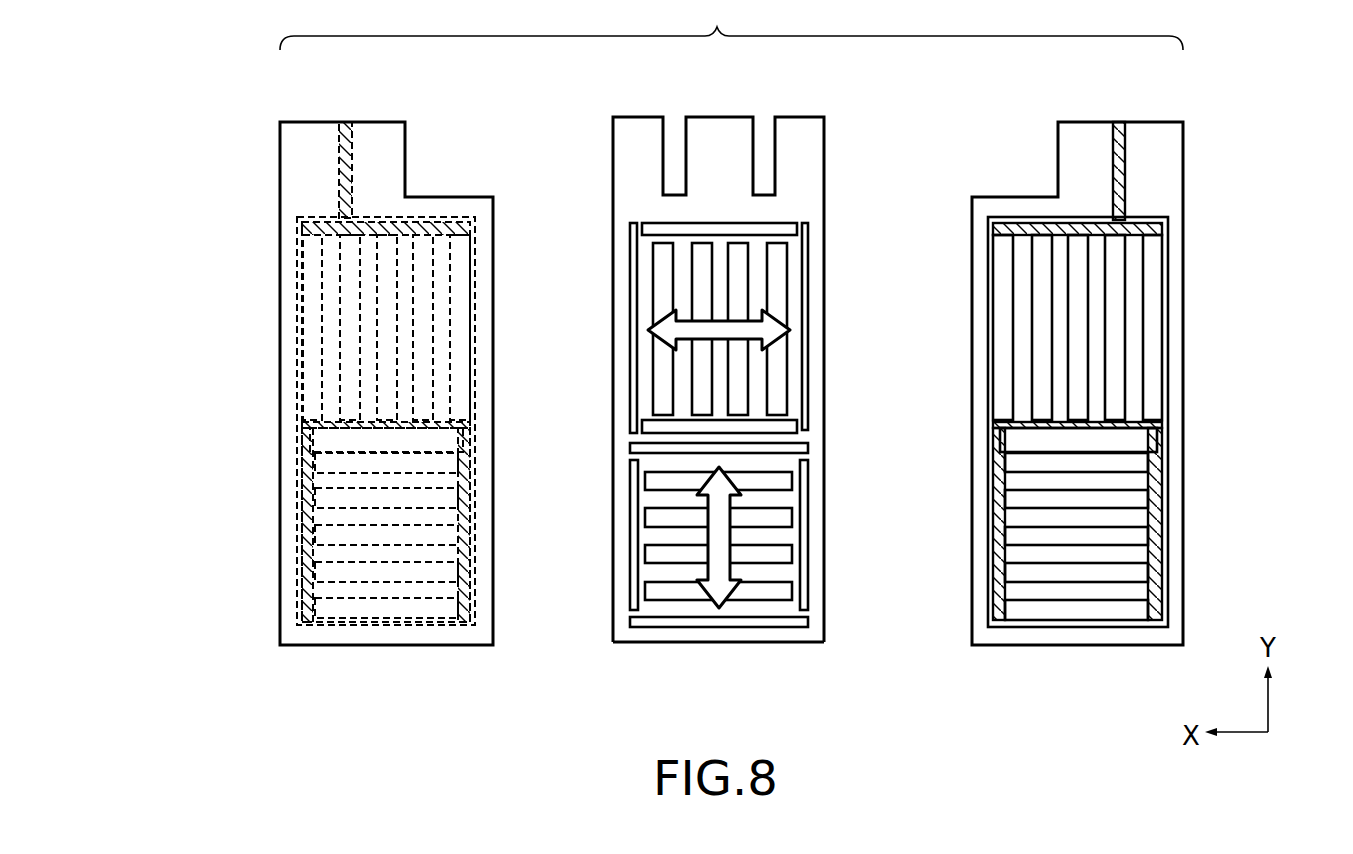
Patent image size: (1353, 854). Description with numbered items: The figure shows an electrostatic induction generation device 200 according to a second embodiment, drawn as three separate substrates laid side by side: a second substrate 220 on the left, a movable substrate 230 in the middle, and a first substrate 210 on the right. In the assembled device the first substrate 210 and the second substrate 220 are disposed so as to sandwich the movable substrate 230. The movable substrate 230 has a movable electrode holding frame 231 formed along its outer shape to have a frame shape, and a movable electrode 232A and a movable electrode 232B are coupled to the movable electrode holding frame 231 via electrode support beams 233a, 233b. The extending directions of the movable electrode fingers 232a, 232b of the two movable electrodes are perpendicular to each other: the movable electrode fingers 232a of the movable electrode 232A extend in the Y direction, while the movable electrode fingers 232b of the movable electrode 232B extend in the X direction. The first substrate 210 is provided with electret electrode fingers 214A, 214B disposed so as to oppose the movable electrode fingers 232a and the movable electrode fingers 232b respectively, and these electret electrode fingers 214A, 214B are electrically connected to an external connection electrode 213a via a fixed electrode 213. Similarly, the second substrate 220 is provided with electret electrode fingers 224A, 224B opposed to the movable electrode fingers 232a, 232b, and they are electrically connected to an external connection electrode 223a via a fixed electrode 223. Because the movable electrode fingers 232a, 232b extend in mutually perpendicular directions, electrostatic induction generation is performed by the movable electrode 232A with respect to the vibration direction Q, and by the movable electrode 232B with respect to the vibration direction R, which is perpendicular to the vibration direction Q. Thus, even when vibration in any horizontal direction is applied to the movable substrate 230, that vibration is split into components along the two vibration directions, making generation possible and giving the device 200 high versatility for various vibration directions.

The electrostatic induction generation device 200 is at (731, 25).
The first substrate 210 is at (1088, 133).
The fixed electrode 213 is at (1148, 228).
The external connection electrode 213a is at (1118, 170).
The electret electrode fingers 214A is at (1115, 287).
The electret electrode fingers 214B is at (1140, 575).
The second substrate 220 is at (376, 133).
The fixed electrode 223 is at (305, 232).
The external connection electrode 223a is at (340, 177).
The electret electrode fingers 224A is at (345, 292).
The electret electrode fingers 224B is at (325, 576).
The movable substrate 230 is at (720, 133).
The movable electrode holding frame 231 is at (762, 637).
The movable electrode 232A is at (812, 263).
The movable electrode fingers 232a is at (750, 378).
The movable electrode 232B is at (812, 585).
The movable electrode fingers 232b is at (758, 540).
The electrode support beam 233a is at (800, 220).
The electrode support beam 233b is at (800, 612).
The vibration direction Q is at (790, 325).
The vibration direction R is at (740, 483).